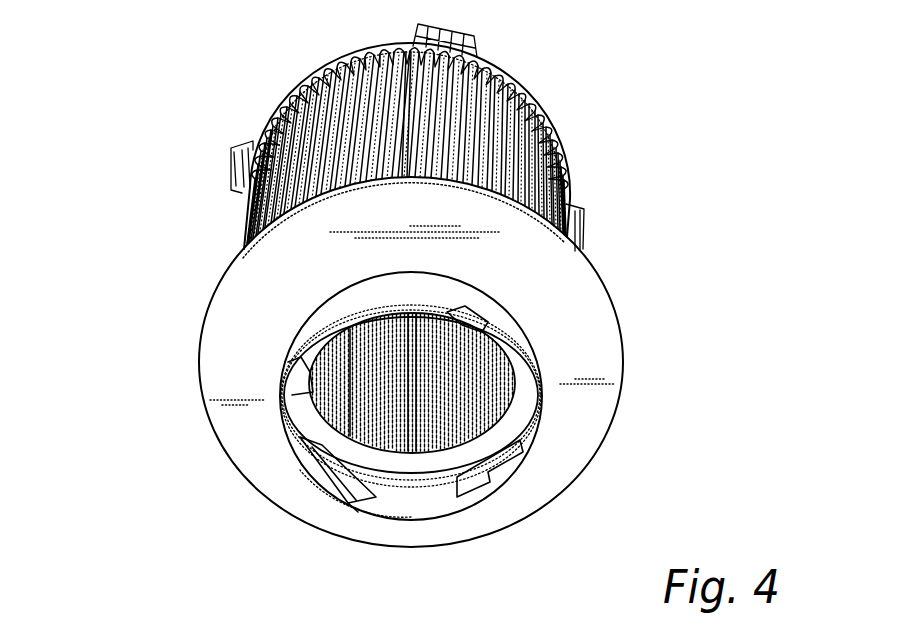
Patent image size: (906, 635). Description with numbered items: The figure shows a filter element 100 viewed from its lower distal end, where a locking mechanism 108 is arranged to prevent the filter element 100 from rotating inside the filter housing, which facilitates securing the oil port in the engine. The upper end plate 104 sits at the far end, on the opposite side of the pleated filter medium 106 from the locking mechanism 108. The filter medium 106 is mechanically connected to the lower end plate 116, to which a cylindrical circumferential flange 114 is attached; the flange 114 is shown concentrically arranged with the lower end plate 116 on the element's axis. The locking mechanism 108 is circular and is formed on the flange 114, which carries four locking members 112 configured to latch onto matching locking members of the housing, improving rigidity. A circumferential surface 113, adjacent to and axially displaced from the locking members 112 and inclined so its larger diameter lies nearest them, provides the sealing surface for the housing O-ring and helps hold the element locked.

The filter element 100 is at (183, 190).
The upper end plate 104 is at (425, 125).
The filter medium 106 is at (500, 148).
The locking mechanism 108 is at (560, 420).
The locking member 112 is at (467, 323).
The circumferential surface 113 is at (428, 465).
The circumferential flange 114 is at (327, 313).
The lower end plate 116 is at (224, 346).